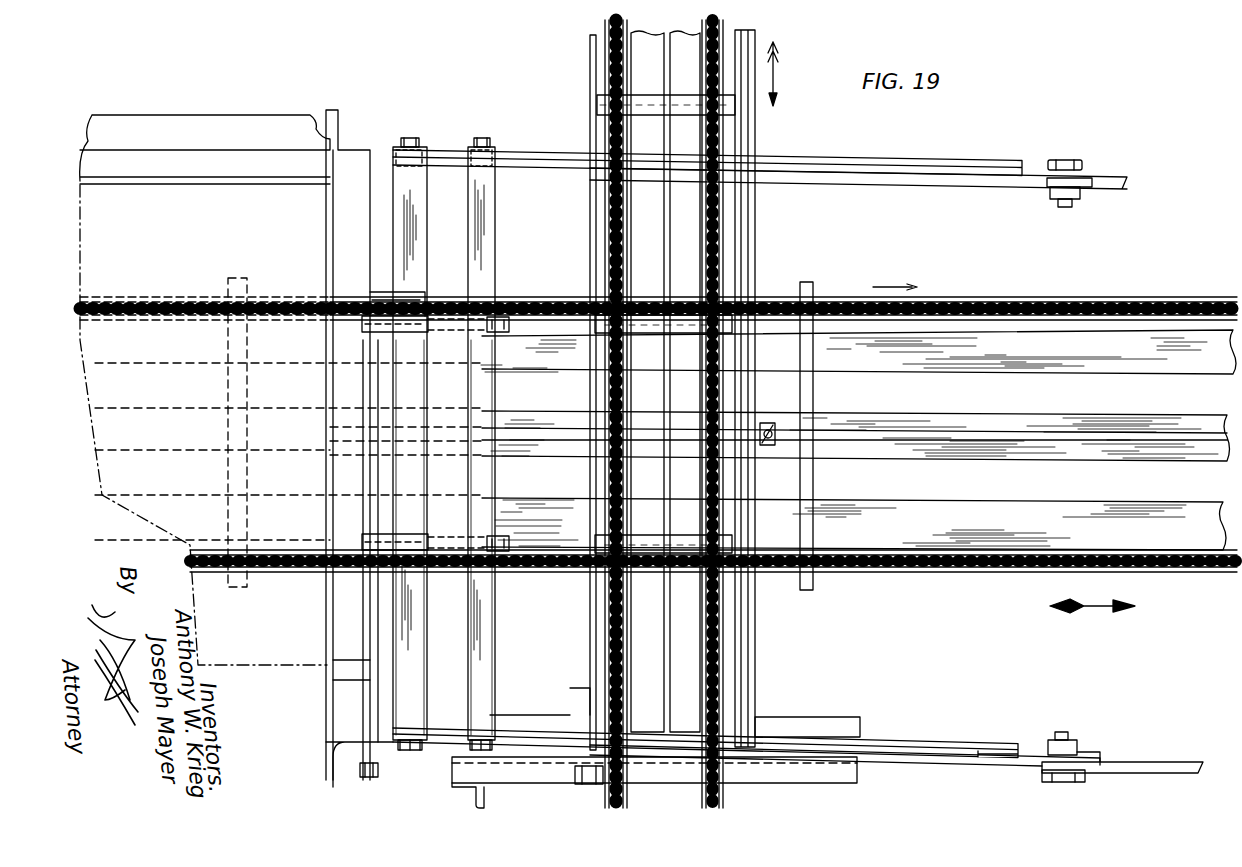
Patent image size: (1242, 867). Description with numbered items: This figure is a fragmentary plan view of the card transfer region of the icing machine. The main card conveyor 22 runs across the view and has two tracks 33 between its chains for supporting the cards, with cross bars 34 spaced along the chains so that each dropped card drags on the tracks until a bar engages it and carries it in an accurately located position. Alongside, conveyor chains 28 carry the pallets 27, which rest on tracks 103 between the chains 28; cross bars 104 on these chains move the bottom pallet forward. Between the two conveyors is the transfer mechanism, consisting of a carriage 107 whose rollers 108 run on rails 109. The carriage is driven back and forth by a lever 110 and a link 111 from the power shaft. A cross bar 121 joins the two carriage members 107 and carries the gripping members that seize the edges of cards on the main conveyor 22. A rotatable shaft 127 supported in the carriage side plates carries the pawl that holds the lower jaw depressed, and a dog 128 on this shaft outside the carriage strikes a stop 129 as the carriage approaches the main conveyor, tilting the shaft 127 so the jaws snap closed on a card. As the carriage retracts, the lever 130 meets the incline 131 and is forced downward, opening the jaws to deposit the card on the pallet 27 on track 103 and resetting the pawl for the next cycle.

The pallet 27 is at (226, 241).
The card conveyor 22 is at (702, 799).
The tracks 33 is at (658, 696).
The cross bars 34 is at (597, 103).
The conveyor chains 28 is at (997, 300).
The tracks 103 is at (960, 358).
The cross bars 104 is at (802, 410).
The carriage 107 is at (443, 146).
The rollers 108 is at (518, 138).
The cross bar 121 is at (412, 650).
The rails 109 is at (813, 167).
The link 111 is at (1037, 178).
The lever 110 is at (1090, 167).
The incline 131 is at (423, 322).
The lever 130 is at (460, 326).
The rotatable shaft 127 is at (375, 650).
The dog 128 is at (365, 777).
The stop 129 is at (578, 778).